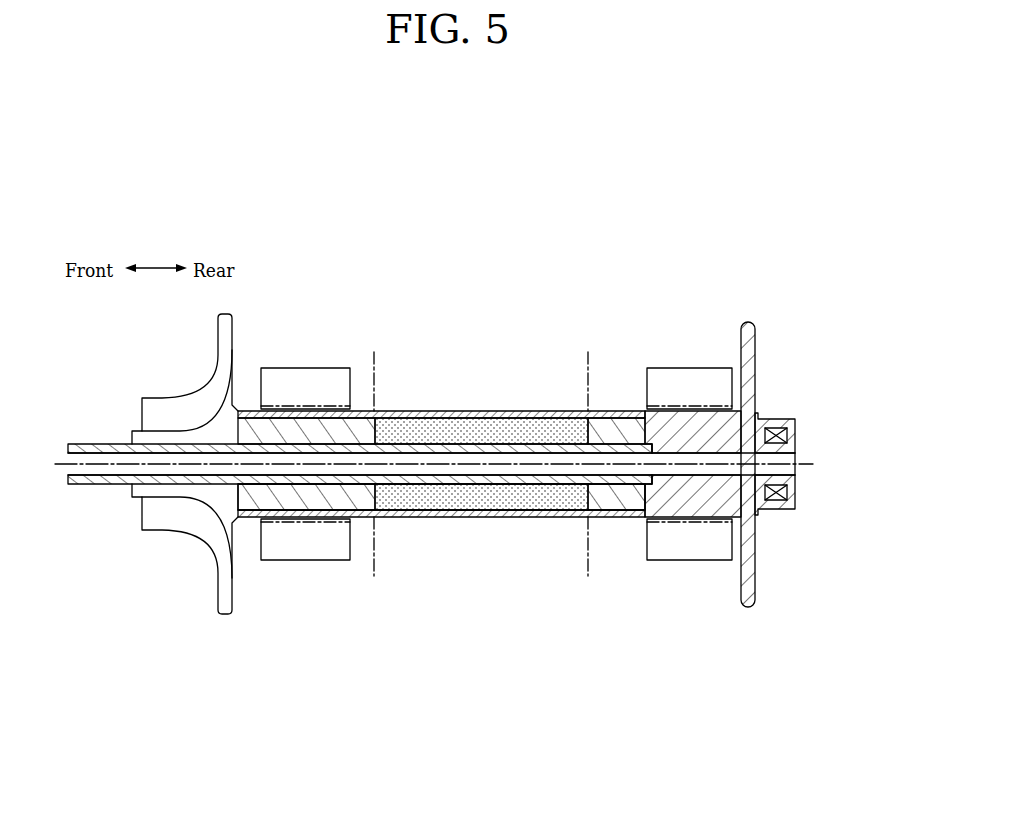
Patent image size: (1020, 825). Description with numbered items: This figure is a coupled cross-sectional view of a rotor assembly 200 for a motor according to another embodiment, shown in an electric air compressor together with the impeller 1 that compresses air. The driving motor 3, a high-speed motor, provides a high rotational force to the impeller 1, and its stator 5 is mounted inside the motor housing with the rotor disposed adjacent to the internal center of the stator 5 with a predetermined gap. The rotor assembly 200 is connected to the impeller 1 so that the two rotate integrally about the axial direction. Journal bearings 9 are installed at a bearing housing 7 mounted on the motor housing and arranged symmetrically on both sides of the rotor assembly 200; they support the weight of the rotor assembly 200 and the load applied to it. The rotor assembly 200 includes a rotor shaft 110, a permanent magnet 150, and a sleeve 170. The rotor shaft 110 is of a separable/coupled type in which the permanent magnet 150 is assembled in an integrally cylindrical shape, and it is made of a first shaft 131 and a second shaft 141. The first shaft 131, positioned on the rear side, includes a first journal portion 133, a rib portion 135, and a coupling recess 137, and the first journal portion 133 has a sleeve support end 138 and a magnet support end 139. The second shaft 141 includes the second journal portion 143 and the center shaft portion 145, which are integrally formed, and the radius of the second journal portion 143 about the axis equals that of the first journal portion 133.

The rotor assembly 200 is at (456, 236).
The impeller 1 is at (160, 397).
The center shaft portion 145 is at (193, 448).
The bearing housing 7 is at (280, 368).
The journal bearing 9 is at (317, 406).
The stator 5 is at (374, 365).
The driving motor 3 is at (593, 356).
The sleeve 170 is at (402, 411).
The second journal portion 143 is at (305, 498).
The permanent magnet 150 is at (431, 413).
The magnet support end 139 is at (567, 420).
The second shaft 141 is at (391, 490).
The coupling recess 137 is at (648, 453).
The first journal portion 133 is at (712, 508).
The sleeve support end 138 is at (640, 510).
The first shaft 131 is at (663, 529).
The rib portion 135 is at (757, 358).
The rotor shaft 110 is at (678, 655).